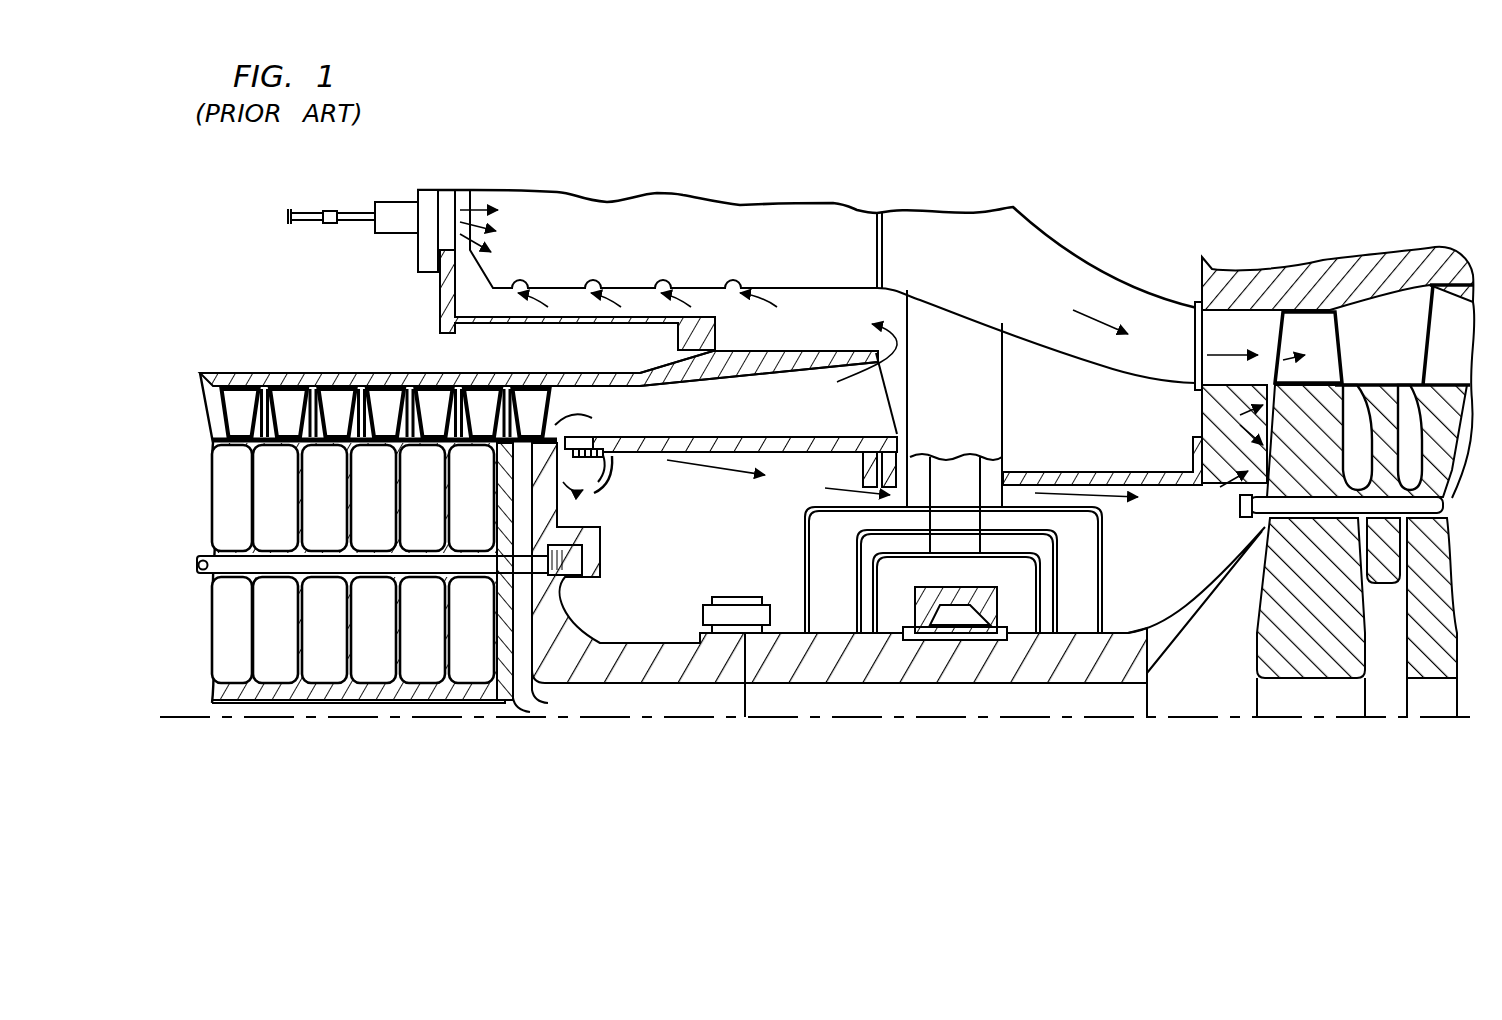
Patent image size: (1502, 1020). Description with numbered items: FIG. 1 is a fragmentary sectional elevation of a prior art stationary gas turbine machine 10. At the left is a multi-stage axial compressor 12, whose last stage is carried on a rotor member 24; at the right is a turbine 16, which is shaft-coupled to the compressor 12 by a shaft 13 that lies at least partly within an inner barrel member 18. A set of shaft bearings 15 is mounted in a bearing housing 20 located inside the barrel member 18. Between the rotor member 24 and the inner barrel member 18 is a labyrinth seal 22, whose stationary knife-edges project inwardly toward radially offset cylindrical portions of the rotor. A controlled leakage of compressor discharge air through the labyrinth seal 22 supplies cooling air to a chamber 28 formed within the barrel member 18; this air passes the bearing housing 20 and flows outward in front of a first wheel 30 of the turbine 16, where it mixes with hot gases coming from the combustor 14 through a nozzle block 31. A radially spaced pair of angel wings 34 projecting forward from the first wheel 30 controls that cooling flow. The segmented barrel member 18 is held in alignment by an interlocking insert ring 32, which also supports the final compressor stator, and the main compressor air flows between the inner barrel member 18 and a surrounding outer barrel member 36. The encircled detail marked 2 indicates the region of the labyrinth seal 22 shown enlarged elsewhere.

The gas turbine machine 10 is at (206, 501).
The multi-stage axial compressor 12 is at (248, 477).
The shaft 13 is at (1120, 633).
The combustor 14 is at (550, 322).
The shaft bearings 15 is at (1003, 622).
The turbine 16 is at (1390, 553).
The inner barrel member 18 is at (732, 440).
The bearing housing 20 is at (812, 540).
The labyrinth seal 22 is at (608, 453).
The rotor member 24 is at (596, 489).
The chamber 28 is at (756, 519).
The first wheel 30 is at (1318, 462).
The nozzle block 31 is at (1215, 300).
The interlocking insert ring 32 is at (592, 433).
The angel wings 34 is at (1235, 425).
The outer barrel member 36 is at (645, 386).
The section view indicator 2 is at (566, 453).